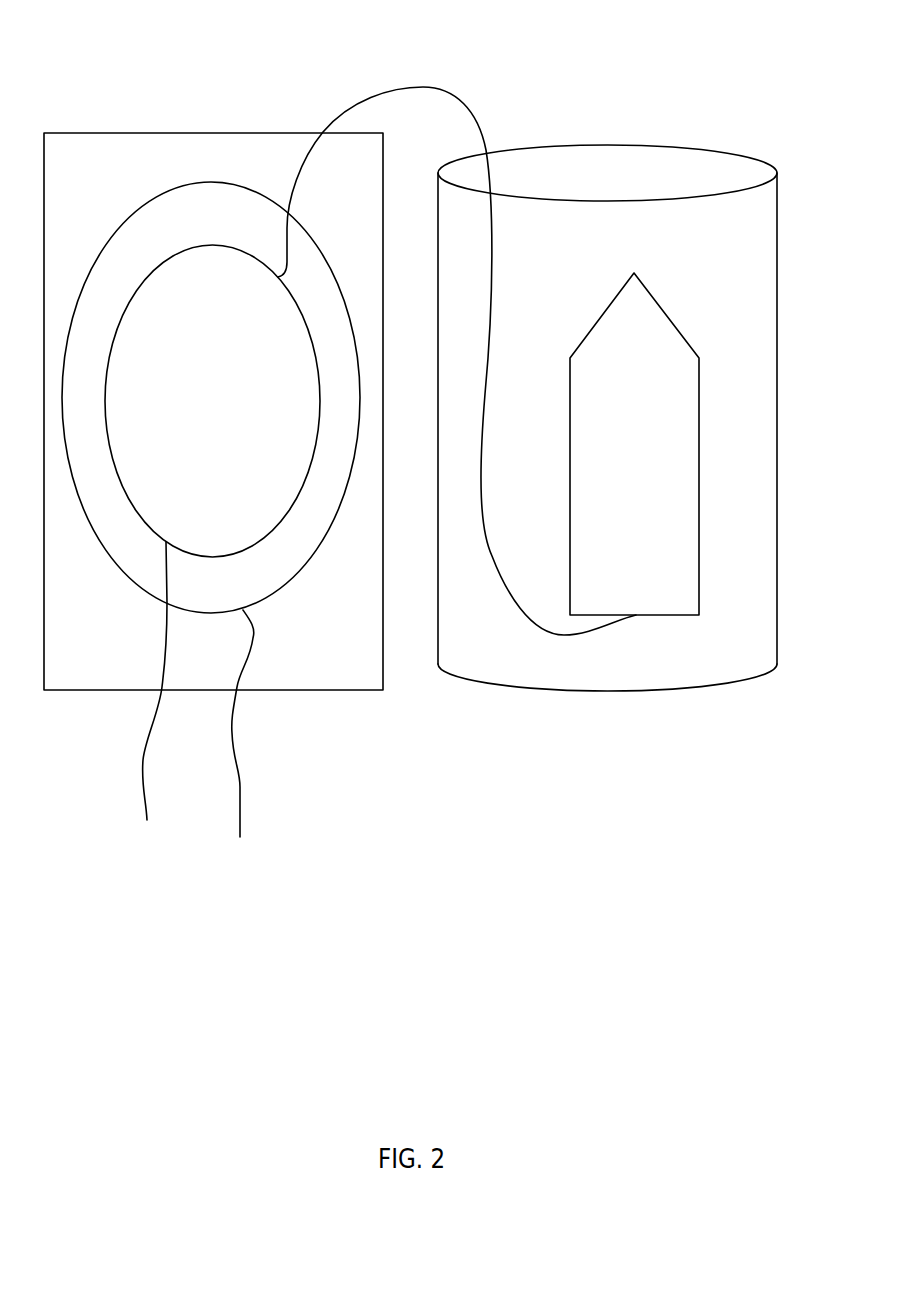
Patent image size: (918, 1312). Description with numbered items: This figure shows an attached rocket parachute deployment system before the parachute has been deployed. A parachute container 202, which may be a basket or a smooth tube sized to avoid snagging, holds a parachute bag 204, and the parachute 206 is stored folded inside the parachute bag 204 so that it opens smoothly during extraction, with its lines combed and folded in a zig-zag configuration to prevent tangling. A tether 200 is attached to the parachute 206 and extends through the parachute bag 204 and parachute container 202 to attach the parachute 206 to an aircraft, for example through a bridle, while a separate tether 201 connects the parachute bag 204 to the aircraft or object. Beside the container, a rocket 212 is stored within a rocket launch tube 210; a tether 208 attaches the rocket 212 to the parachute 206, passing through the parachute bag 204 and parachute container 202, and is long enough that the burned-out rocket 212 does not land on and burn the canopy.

The tether 200 is at (144, 807).
The tether 201 is at (239, 819).
The parachute container 202 is at (300, 132).
The parachute bag 204 is at (124, 222).
The parachute 206 is at (112, 343).
The tether 208 is at (423, 87).
The rocket launch tube 210 is at (620, 144).
The rocket 212 is at (589, 333).